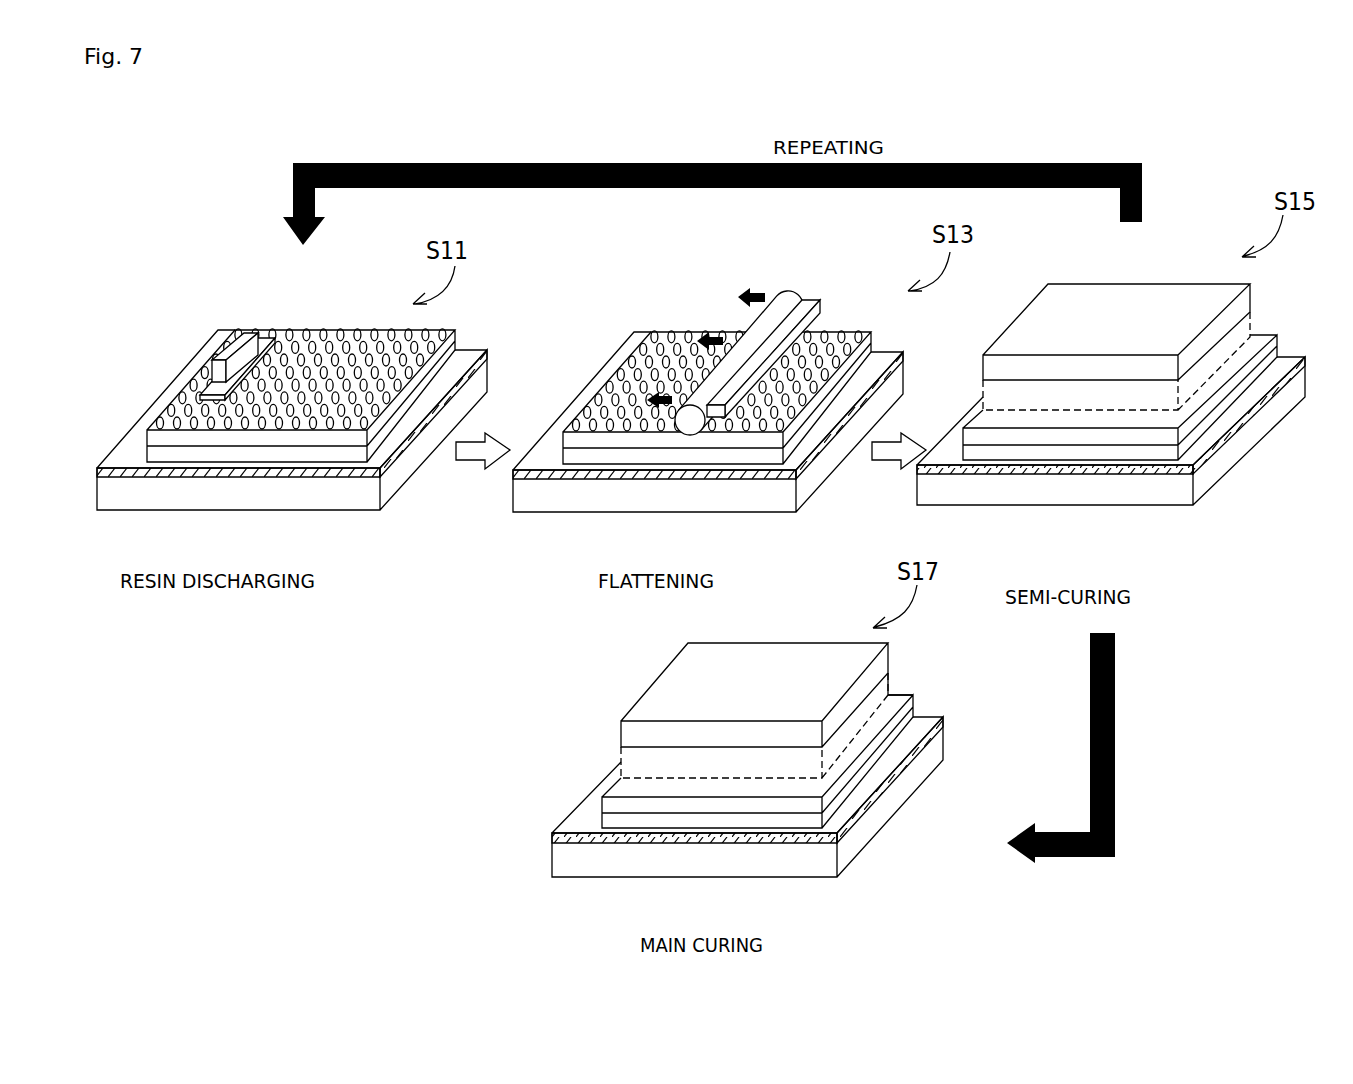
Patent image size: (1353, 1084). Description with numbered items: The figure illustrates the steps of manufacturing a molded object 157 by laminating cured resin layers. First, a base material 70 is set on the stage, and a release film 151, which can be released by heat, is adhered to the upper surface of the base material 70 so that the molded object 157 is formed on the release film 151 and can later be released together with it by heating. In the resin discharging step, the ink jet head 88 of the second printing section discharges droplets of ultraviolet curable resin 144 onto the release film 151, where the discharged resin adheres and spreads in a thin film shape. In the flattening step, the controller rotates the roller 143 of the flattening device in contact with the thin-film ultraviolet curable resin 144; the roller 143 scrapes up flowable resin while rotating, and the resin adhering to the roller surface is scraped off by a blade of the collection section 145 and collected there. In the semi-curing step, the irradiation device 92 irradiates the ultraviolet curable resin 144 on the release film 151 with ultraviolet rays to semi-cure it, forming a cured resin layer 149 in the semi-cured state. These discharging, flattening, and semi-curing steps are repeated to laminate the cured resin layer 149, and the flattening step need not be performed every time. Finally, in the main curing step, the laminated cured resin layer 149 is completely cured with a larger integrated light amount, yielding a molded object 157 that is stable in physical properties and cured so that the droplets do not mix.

The base material 70 is at (355, 512).
The release film 151 is at (163, 477).
The cured resin layer 149 is at (270, 452).
The ultraviolet curable resin 144 is at (334, 352).
The ink jet head 88 is at (240, 334).
The roller 143 is at (790, 293).
The collection section 145 is at (811, 299).
The irradiation device 92 is at (1169, 299).
The molded object 157 is at (900, 690).